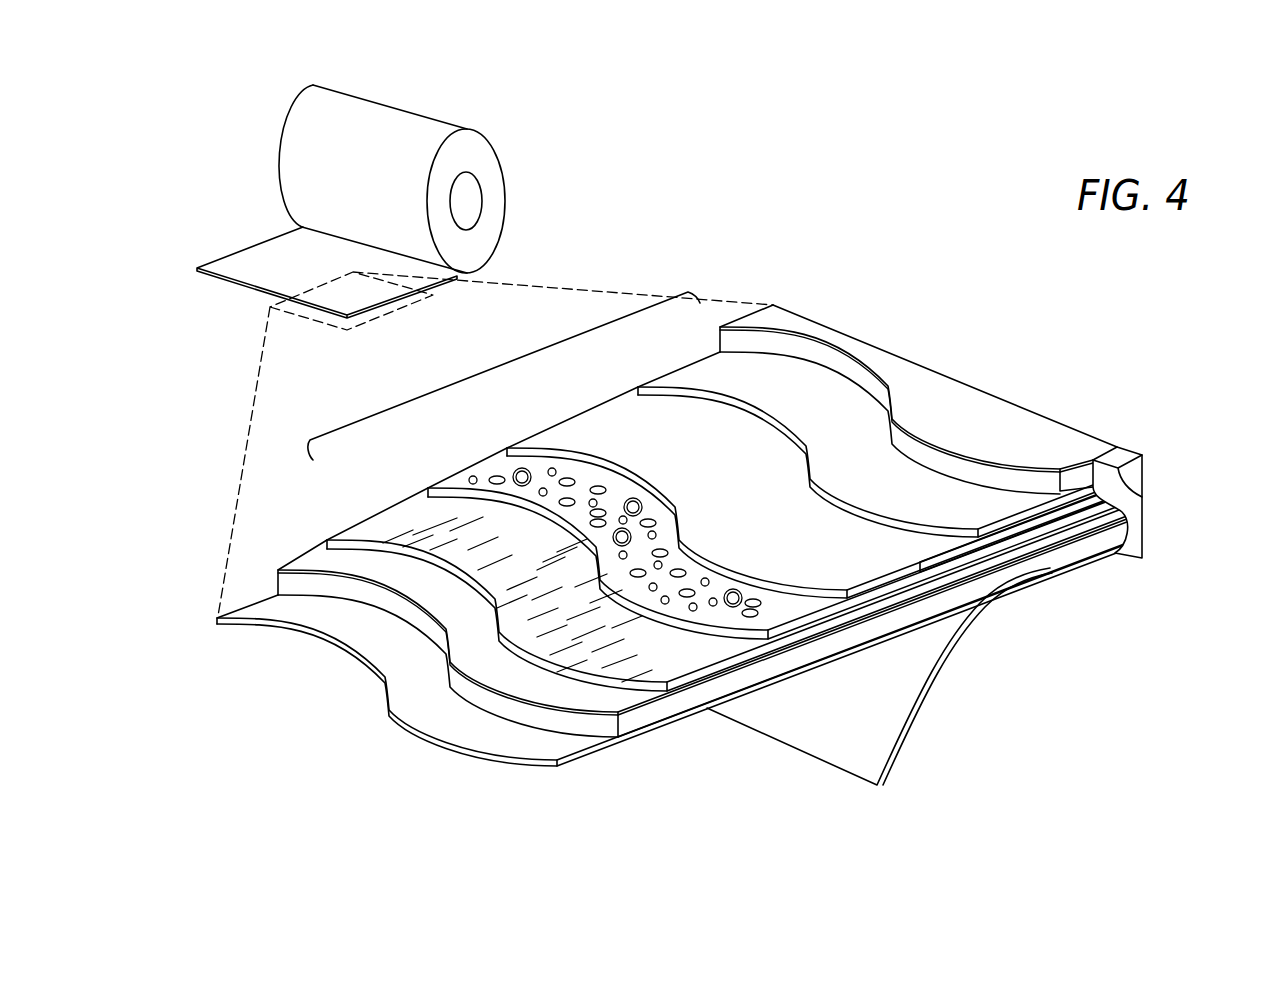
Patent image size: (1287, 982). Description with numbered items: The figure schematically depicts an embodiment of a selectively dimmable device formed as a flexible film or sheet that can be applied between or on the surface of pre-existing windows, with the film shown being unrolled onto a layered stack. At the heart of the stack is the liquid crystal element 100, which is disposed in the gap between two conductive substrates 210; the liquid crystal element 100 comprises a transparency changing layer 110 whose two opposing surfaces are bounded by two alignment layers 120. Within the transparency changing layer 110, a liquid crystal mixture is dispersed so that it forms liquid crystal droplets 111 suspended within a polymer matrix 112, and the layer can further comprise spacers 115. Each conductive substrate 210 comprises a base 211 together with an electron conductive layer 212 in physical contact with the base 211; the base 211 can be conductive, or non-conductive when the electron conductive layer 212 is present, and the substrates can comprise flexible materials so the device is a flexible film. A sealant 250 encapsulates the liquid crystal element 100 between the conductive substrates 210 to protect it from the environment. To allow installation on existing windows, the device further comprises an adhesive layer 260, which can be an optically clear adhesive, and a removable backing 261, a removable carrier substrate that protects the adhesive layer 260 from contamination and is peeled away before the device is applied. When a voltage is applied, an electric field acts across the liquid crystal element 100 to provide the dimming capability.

The liquid crystal element 100 is at (483, 370).
The transparency changing layer 110 is at (918, 562).
The liquid crystal droplets 111 is at (495, 476).
The polymer matrix 112 is at (592, 478).
The spacers 115 is at (631, 498).
The alignment layers 120 is at (407, 513).
The conductive substrates 210 is at (280, 469).
The base 211 is at (277, 583).
The electron conductive layer 212 is at (317, 557).
The sealant 250 is at (1143, 556).
The adhesive layer 260 is at (316, 640).
The removable backing 261 is at (942, 667).